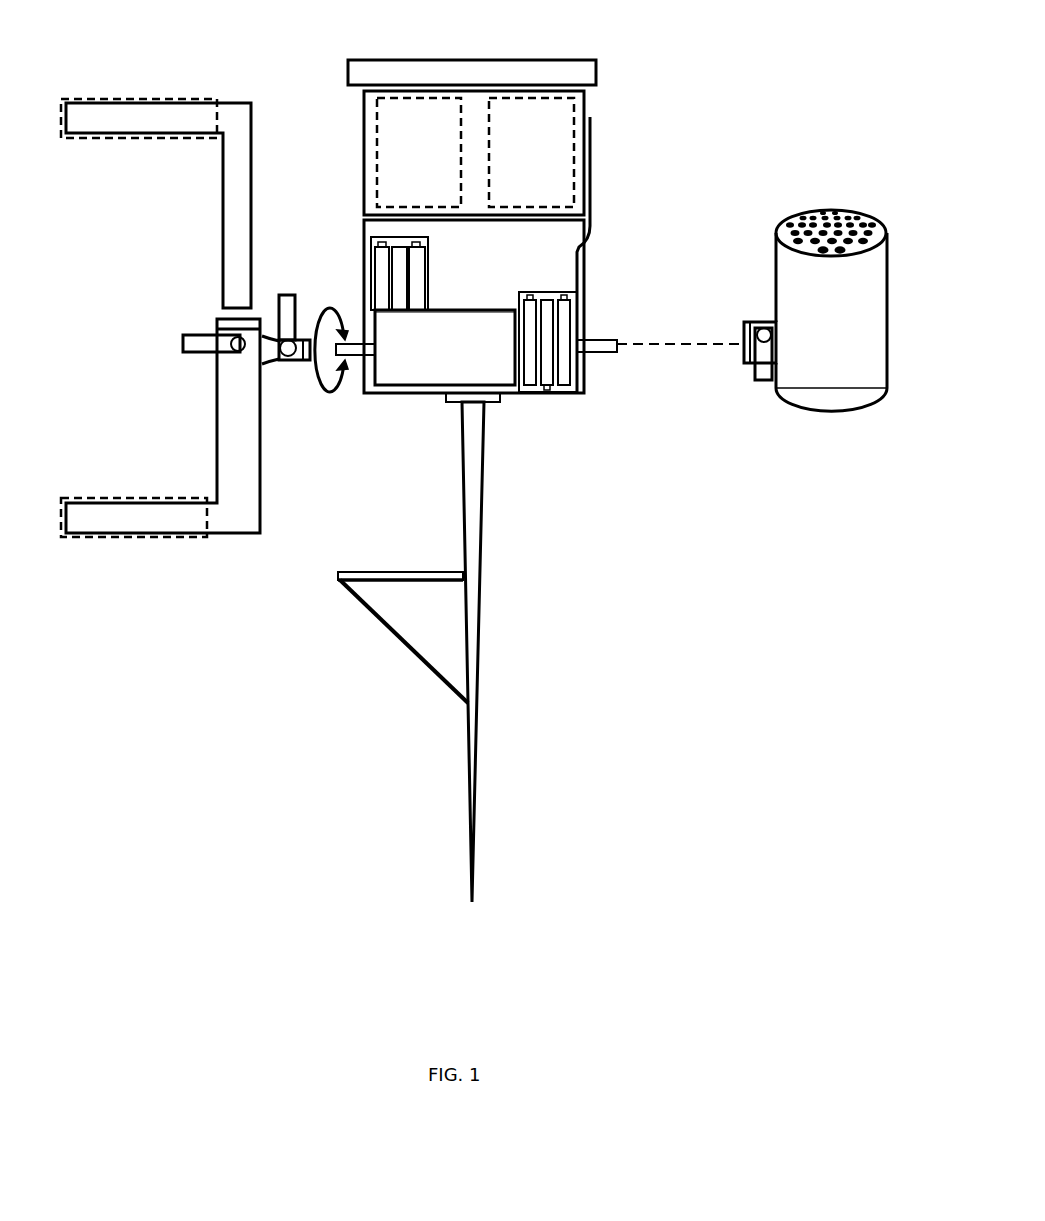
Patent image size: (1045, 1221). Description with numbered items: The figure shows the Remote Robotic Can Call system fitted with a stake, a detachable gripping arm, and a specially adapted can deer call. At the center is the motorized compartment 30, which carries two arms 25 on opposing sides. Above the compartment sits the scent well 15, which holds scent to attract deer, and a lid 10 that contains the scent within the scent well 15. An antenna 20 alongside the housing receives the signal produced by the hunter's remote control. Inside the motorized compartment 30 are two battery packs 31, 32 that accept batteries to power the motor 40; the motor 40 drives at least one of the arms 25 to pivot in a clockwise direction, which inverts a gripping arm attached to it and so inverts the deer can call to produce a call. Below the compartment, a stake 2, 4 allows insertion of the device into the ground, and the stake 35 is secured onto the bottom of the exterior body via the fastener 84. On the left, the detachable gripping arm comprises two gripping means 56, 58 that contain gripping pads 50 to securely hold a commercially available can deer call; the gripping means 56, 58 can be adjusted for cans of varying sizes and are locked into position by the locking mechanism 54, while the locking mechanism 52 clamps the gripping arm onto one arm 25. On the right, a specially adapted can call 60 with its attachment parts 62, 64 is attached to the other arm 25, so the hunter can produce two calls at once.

The lid 10 is at (473, 57).
The scent well 15 is at (471, 152).
The antenna 20 is at (594, 156).
The motorized compartment 30 is at (588, 262).
The battery pack 31 is at (378, 262).
The battery pack 32 is at (567, 378).
The stake 35 is at (473, 310).
The motor 40 is at (417, 370).
The arm 25 is at (355, 356).
The fastener 84 is at (498, 403).
The stake 2 is at (460, 473).
The stake 4 is at (338, 577).
The gripping pad 50 is at (137, 97).
The locking mechanism 52 is at (287, 292).
The locking mechanism 54 is at (183, 344).
The gripping means 56 is at (238, 110).
The gripping means 58 is at (237, 525).
The can deer call 60 is at (890, 292).
The can call attachment 62 is at (742, 355).
The can call attachment 64 is at (763, 370).